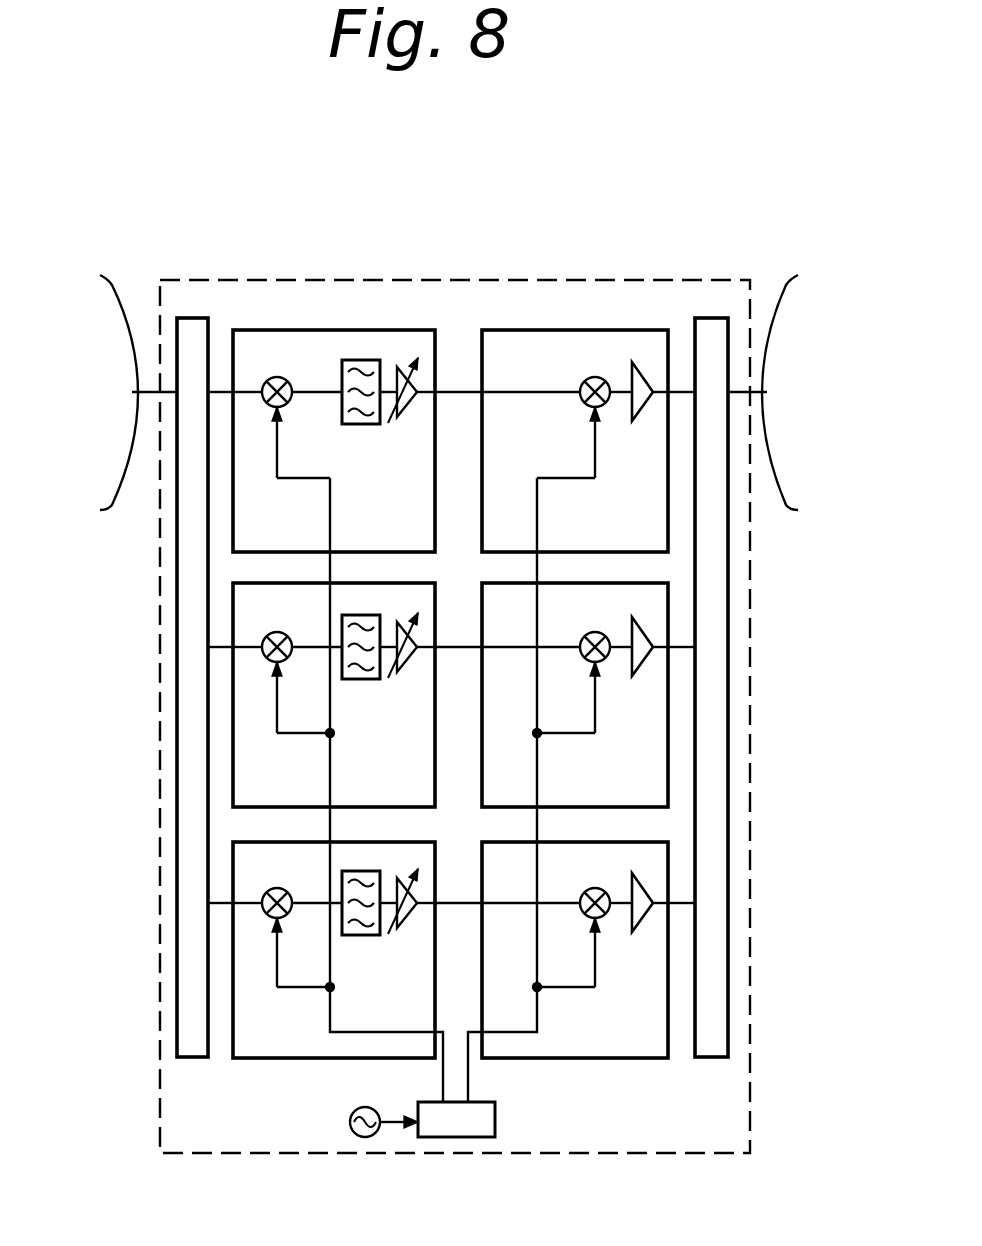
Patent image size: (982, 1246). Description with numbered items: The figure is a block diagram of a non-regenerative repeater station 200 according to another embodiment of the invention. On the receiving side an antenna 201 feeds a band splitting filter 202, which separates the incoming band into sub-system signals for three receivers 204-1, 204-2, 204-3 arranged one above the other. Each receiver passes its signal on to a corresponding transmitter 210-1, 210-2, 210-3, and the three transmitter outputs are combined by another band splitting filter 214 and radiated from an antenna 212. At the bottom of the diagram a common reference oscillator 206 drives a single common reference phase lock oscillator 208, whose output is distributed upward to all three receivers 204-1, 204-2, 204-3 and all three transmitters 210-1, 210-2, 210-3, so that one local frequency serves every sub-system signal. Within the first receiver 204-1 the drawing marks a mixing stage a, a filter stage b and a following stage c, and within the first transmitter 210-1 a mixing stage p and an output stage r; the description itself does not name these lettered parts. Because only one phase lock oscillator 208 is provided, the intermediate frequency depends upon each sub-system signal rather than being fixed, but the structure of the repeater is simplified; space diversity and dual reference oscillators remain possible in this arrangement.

The non-regenerative repeater station 200 is at (353, 279).
The antenna 201 is at (112, 277).
The band splitting filter 202 is at (190, 1059).
The receiver 204-1 is at (327, 422).
The receiver 204-2 is at (233, 636).
The receiver 204-3 is at (233, 977).
The common reference oscillator 206 is at (351, 1122).
The common reference phase lock oscillator 208 is at (497, 1116).
The transmitter 210-1 is at (575, 422).
The transmitter 210-2 is at (668, 680).
The transmitter 210-3 is at (668, 990).
The antenna 212 is at (782, 277).
The band splitting filter 214 is at (713, 1057).
The mixer a is at (286, 379).
The band-pass filter b is at (367, 358).
The variable attenuator c is at (402, 423).
The mixer p is at (584, 378).
The amplifier r is at (645, 420).